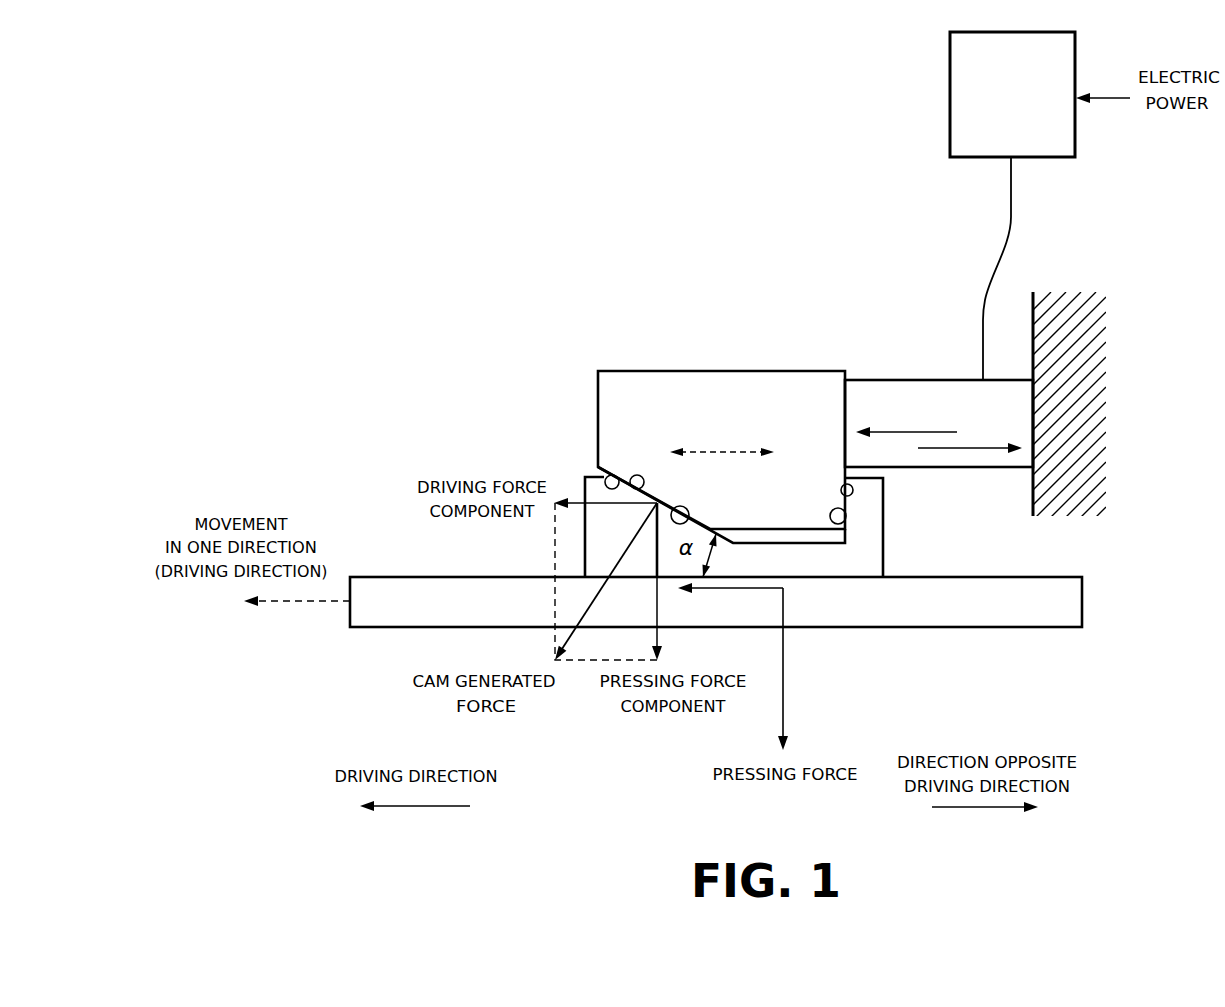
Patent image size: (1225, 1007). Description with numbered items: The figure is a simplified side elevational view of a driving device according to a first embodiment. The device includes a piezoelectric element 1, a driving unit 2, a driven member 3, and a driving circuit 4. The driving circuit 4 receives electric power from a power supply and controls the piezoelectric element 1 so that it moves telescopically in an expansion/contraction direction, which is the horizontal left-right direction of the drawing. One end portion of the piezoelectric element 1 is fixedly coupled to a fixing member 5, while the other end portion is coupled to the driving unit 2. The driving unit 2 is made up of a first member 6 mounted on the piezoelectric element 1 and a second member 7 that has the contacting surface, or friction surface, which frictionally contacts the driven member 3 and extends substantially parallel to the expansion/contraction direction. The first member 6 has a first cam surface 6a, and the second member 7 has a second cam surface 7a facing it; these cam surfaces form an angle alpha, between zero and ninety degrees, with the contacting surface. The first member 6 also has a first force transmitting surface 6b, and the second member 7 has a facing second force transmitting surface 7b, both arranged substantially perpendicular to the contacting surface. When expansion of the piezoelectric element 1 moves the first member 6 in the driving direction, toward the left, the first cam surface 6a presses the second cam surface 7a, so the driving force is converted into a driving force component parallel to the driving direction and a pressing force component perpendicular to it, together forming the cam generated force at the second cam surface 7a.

The piezoelectric element 1 is at (906, 378).
The driving unit 2 is at (750, 368).
The driven member 3 is at (400, 574).
The driving circuit 4 is at (950, 100).
The fixing member 5 is at (1033, 318).
The first member 6 is at (637, 368).
The first cam surface 6a is at (682, 508).
The first force transmitting surface 6b is at (845, 490).
The second member 7 is at (888, 562).
The second cam surface 7a is at (624, 480).
The second force transmitting surface 7b is at (850, 509).